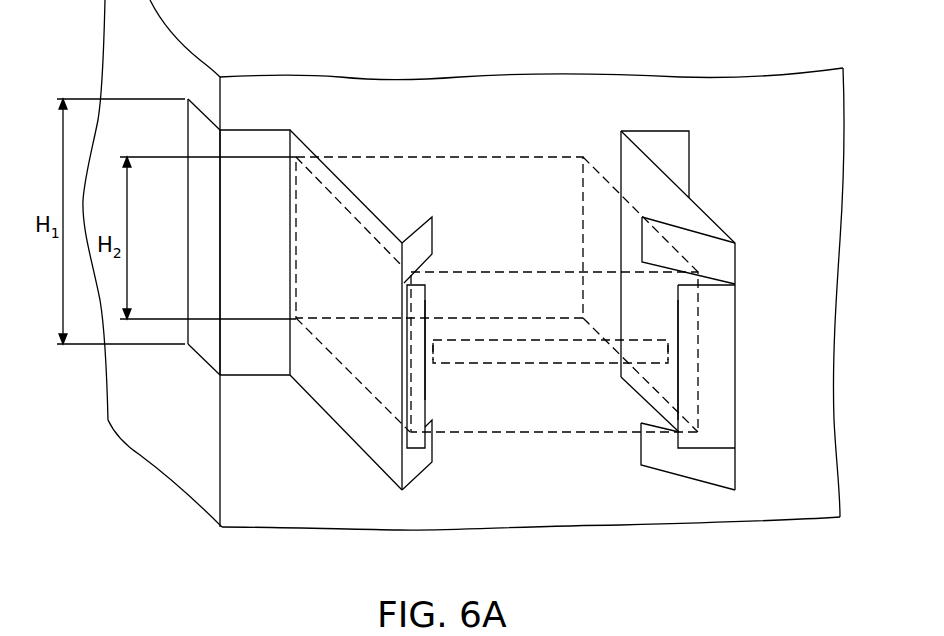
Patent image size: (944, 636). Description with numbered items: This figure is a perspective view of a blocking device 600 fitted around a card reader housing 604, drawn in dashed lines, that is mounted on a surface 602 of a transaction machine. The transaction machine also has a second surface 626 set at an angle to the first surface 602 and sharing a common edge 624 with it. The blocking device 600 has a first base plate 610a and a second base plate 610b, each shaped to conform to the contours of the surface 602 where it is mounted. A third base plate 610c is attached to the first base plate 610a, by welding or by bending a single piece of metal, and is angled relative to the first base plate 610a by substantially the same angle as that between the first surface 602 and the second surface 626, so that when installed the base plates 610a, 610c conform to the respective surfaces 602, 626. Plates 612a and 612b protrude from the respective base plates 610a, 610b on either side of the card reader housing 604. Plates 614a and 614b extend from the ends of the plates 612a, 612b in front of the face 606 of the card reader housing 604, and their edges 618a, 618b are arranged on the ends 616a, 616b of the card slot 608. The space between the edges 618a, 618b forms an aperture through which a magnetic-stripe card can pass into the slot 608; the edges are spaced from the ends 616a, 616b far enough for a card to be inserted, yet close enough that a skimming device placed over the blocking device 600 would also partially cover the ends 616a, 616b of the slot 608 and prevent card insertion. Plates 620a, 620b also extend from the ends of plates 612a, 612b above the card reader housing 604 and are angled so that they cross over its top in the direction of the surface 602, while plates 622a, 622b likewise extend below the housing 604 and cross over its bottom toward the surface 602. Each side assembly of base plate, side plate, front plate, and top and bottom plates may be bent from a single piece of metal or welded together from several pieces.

The blocking device 600 is at (688, 66).
The surface of a transaction machine 602 is at (480, 110).
The card reader housing 604 is at (497, 294).
The face of the card reader housing 606 is at (554, 352).
The card slot 608 is at (552, 350).
The first base plate 610a is at (253, 142).
The second base plate 610b is at (662, 139).
The third base plate 610c is at (202, 343).
The plate 612a is at (302, 380).
The plate 612b is at (703, 225).
The plate 614a is at (417, 403).
The plate 614b is at (722, 375).
The end of the card slot 616a is at (428, 350).
The end of the card slot 616b is at (675, 352).
The edge of plate 618a is at (427, 377).
The edge of plate 618b is at (670, 382).
The plate 620a is at (420, 233).
The plate 620b is at (650, 238).
The plate 622a is at (423, 462).
The plate 622b is at (668, 460).
The common edge 624 is at (220, 436).
The second surface 626 is at (220, 223).